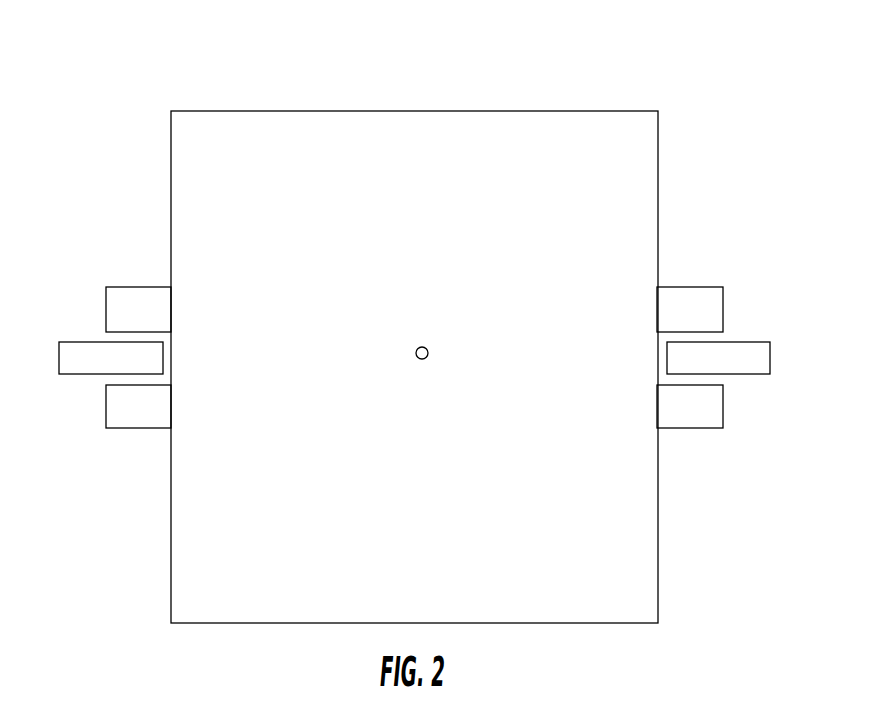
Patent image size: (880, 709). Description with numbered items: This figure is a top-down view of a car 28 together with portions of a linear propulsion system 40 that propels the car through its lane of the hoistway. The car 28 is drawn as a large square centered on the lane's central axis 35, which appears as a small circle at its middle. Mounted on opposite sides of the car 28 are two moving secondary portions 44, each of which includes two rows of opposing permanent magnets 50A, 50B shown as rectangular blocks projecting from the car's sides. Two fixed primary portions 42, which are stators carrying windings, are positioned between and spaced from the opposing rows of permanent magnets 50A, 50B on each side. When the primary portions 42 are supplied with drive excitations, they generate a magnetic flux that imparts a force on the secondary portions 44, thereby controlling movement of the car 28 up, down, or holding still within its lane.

The car 28 is at (445, 111).
The linear propulsion system 40 is at (699, 74).
The central axis 35 is at (428, 350).
The primary portion 42 is at (61, 386).
The secondary portion 44 is at (141, 282).
The permanent magnets 50A is at (106, 305).
The permanent magnets 50B is at (133, 428).